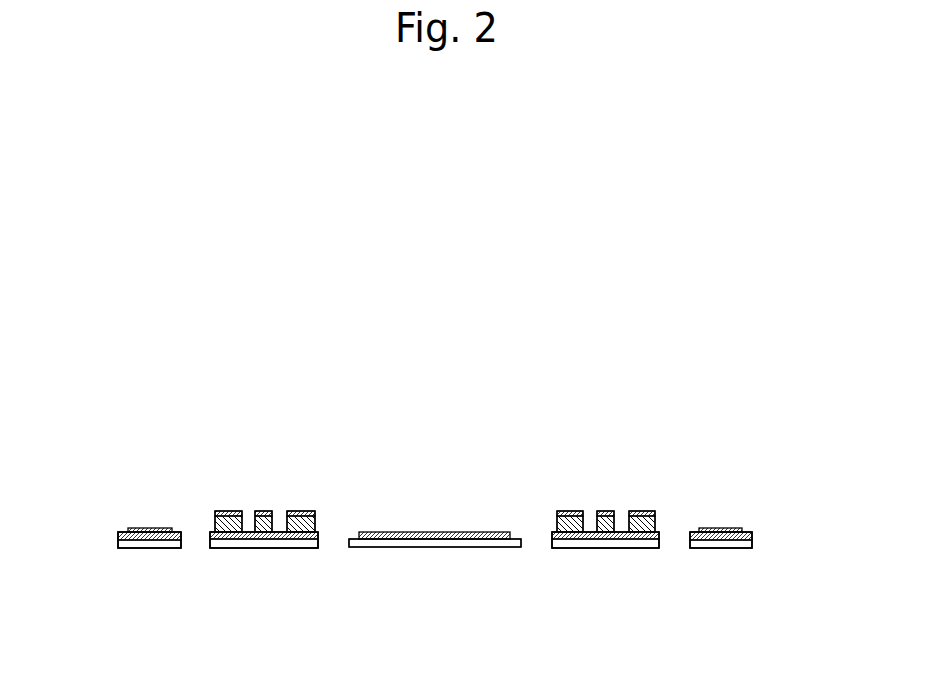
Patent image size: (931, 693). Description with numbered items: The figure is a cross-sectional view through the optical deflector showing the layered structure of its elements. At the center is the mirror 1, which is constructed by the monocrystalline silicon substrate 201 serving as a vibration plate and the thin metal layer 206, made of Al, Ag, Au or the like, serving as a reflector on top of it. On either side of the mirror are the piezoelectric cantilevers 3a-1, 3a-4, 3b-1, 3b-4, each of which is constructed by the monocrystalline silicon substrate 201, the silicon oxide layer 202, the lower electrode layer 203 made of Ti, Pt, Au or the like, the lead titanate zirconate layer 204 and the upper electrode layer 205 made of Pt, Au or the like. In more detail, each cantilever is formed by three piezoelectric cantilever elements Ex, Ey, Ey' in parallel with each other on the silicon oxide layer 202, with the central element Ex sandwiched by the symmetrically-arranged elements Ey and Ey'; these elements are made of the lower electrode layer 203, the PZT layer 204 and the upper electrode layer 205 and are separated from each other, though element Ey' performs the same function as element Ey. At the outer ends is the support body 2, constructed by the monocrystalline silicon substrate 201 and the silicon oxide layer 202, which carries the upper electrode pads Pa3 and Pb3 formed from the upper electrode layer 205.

The mirror 1 is at (435, 507).
The support body 2 is at (108, 533).
The piezoelectric cantilever 3a-1 is at (266, 272).
The piezoelectric cantilever 3a-4 is at (273, 430).
The piezoelectric cantilever 3b-1 is at (598, 272).
The piezoelectric cantilever 3b-4 is at (607, 430).
The monocrystalline silicon substrate 201 is at (349, 541).
The silicon oxide layer 202 is at (690, 534).
The lower electrode layer 203 is at (215, 531).
The lead titanate zirconate (PZT) layer 204 is at (215, 522).
The upper electrode layer 205 is at (215, 513).
The metal layer 206 is at (359, 533).
The upper electrode pad Pa3 is at (121, 513).
The upper electrode pad Pb3 is at (754, 521).
The piezoelectric cantilever element Ey is at (436, 489).
The piezoelectric cantilever element Ex is at (265, 500).
The piezoelectric cantilever element Ey' is at (435, 488).